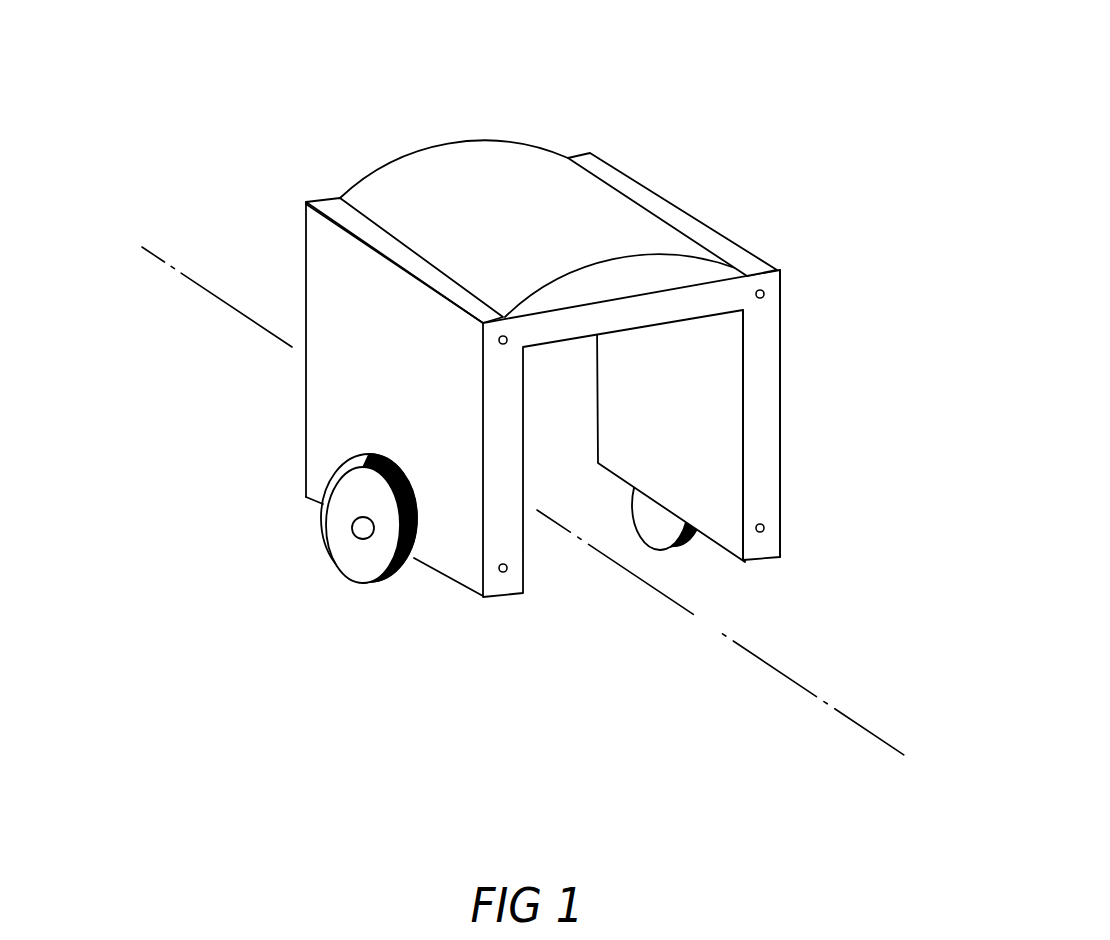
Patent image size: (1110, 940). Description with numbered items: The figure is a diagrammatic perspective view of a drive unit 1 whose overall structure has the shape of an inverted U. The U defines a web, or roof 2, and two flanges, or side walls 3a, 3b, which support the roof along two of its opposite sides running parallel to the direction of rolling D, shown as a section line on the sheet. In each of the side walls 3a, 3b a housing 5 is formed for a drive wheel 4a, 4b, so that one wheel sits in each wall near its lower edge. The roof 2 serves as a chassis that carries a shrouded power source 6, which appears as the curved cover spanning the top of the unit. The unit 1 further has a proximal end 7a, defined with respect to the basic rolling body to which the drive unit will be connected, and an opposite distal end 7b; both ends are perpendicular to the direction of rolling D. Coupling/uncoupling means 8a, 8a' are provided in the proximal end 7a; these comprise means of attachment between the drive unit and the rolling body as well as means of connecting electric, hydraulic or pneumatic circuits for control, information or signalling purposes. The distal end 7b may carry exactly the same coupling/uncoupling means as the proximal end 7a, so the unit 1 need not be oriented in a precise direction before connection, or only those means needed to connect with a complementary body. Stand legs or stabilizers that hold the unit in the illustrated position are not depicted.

The drive unit 1 is at (661, 310).
The web or roof 2 is at (645, 202).
The side wall 3a is at (613, 416).
The side wall 3b is at (347, 346).
The drive wheel 4a is at (690, 547).
The drive wheel 4b is at (352, 560).
The housing 5 is at (375, 450).
The shrouded power source 6 is at (465, 175).
The proximal end 7a is at (767, 437).
The distal end 7b is at (303, 248).
The coupling/uncoupling means 8a is at (687, 454).
The coupling/uncoupling means 8a' is at (815, 273).
The direction of rolling D is at (527, 499).